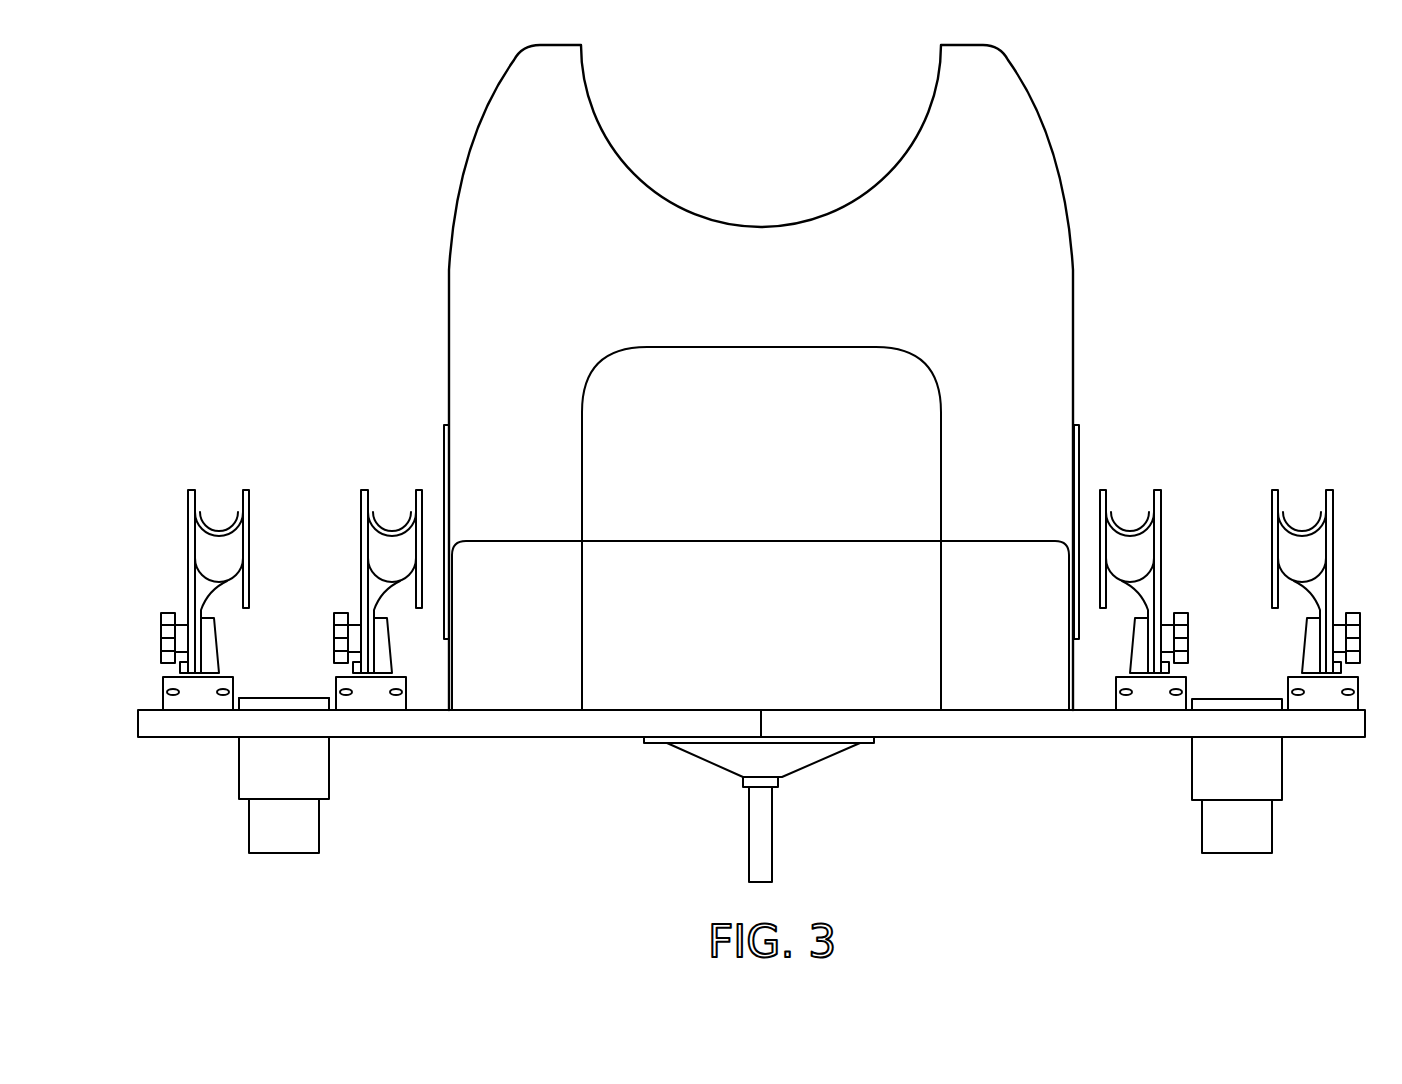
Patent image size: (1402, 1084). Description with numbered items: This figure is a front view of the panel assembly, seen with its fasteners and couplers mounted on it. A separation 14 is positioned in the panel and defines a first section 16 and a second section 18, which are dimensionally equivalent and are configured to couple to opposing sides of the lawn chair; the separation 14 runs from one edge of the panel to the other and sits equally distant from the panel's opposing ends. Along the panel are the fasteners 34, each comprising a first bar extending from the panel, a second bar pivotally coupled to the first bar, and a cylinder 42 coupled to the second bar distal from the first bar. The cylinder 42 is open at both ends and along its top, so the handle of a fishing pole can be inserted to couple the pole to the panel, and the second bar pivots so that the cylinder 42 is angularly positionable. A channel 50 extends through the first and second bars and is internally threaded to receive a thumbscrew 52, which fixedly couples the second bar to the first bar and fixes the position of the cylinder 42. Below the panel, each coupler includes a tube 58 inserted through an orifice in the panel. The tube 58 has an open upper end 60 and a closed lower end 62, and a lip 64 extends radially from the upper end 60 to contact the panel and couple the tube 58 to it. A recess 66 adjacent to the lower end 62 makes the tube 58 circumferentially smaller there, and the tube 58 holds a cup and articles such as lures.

The separation 14 is at (760, 723).
The first section 16 is at (542, 722).
The second section 18 is at (1048, 718).
The fastener 34 is at (1300, 530).
The cylinder 42 is at (203, 550).
The channel 50 is at (212, 640).
The thumbscrew 52 is at (162, 643).
The tube 58 is at (302, 765).
The upper end 60 is at (305, 700).
The lower end 62 is at (287, 853).
The lip 64 is at (270, 706).
The recess 66 is at (1272, 827).